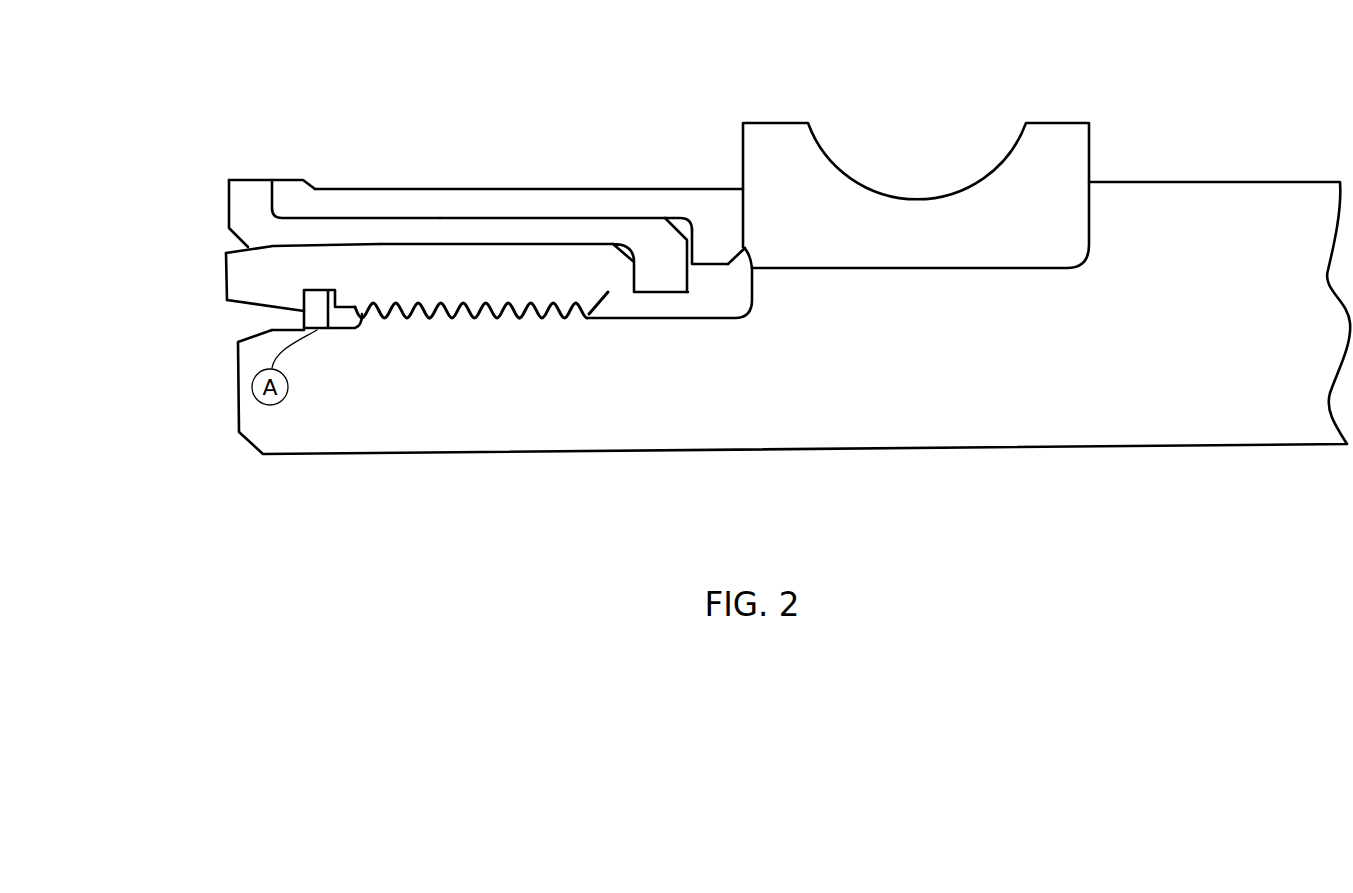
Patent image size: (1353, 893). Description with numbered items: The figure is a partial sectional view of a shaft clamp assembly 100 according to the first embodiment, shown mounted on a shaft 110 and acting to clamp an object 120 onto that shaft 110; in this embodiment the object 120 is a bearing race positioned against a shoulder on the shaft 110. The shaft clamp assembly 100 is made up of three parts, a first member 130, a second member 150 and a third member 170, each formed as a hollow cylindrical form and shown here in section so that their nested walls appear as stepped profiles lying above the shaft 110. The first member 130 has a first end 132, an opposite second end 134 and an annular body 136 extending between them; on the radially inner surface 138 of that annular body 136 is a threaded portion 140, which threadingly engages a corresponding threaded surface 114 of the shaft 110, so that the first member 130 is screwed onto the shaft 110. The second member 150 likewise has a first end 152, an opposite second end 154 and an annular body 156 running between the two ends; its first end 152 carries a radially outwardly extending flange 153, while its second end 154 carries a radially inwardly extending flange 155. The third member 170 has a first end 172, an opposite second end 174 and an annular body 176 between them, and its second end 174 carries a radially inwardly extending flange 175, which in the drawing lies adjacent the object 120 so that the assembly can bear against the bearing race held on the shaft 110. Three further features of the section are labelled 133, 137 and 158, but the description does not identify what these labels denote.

The shaft clamp assembly 100 is at (140, 118).
The shaft 110 is at (1188, 390).
The threaded surface 114 is at (348, 317).
The object 120 is at (932, 182).
The first member 130 is at (481, 341).
The first end 132 is at (247, 295).
The lower plate 133 is at (414, 259).
The second end 134 is at (607, 273).
The annular body 136 is at (418, 283).
The upper surface 137 is at (382, 243).
The radially inner surface 138 is at (503, 317).
The threaded portion 140 is at (548, 317).
The second member 150 is at (497, 248).
The first end 152 is at (253, 190).
The radially outwardly extending flange 153 is at (237, 195).
The second end 154 is at (657, 283).
The radially inwardly extending flange 155 is at (677, 273).
The annular body 156 is at (442, 227).
The cavity 158 is at (338, 260).
The third member 170 is at (548, 185).
The first end 172 is at (290, 190).
The second end 174 is at (717, 253).
The radially inwardly extending flange 175 is at (747, 248).
The annular body 176 is at (530, 205).